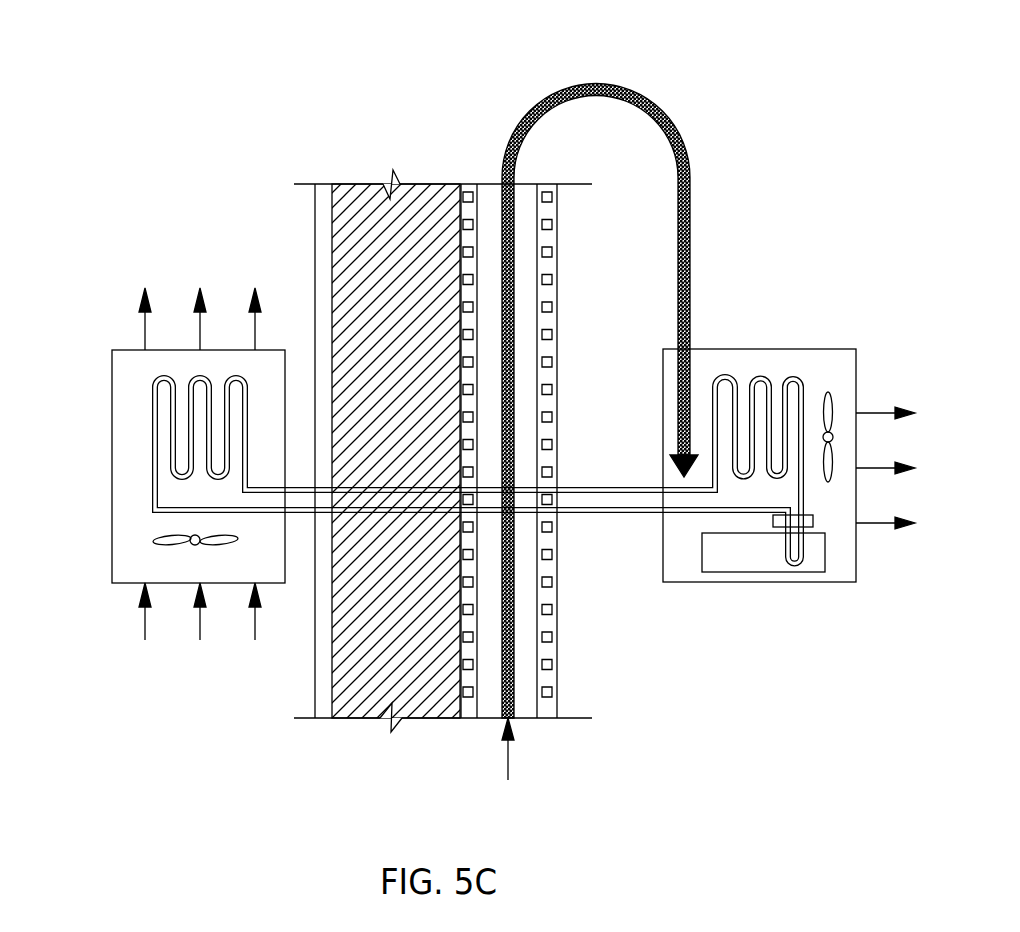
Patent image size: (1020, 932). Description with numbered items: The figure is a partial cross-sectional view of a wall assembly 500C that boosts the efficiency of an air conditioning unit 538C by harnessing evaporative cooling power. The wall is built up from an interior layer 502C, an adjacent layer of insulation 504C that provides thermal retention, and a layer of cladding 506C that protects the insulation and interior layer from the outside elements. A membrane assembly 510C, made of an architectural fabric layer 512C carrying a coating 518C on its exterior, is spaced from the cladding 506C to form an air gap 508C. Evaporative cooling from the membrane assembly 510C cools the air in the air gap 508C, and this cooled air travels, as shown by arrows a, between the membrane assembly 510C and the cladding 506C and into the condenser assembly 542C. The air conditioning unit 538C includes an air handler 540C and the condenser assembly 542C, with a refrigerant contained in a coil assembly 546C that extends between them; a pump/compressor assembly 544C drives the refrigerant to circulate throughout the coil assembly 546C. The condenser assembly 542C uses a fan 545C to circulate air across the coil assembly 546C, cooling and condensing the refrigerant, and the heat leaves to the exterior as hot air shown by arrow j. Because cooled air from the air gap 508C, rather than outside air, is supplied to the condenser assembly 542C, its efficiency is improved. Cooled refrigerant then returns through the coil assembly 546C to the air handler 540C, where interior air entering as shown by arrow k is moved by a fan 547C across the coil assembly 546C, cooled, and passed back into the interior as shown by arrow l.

The wall assembly 500C is at (187, 120).
The interior layer 502C is at (313, 222).
The layer of insulation 504C is at (362, 197).
The cladding 506C is at (470, 712).
The air gap 508C is at (490, 197).
The membrane assembly 510C is at (602, 451).
The architectural fabric layer 512C is at (560, 327).
The coating 518C is at (560, 275).
The air handler 540C is at (112, 398).
The condenser assembly 542C is at (687, 583).
The pump/compressor assembly 544C is at (812, 565).
The fan 545C is at (830, 395).
The coil assembly 546C is at (153, 472).
The fan 547C is at (167, 543).
The air conditioning unit 538C is at (857, 582).
The arrow a is at (691, 181).
The arrow j is at (880, 410).
The arrow k is at (143, 627).
The arrow l is at (143, 327).